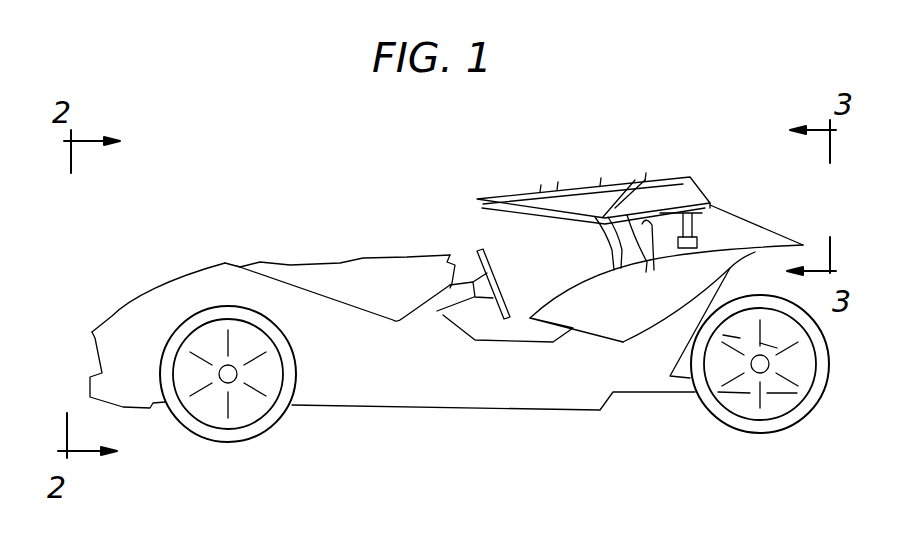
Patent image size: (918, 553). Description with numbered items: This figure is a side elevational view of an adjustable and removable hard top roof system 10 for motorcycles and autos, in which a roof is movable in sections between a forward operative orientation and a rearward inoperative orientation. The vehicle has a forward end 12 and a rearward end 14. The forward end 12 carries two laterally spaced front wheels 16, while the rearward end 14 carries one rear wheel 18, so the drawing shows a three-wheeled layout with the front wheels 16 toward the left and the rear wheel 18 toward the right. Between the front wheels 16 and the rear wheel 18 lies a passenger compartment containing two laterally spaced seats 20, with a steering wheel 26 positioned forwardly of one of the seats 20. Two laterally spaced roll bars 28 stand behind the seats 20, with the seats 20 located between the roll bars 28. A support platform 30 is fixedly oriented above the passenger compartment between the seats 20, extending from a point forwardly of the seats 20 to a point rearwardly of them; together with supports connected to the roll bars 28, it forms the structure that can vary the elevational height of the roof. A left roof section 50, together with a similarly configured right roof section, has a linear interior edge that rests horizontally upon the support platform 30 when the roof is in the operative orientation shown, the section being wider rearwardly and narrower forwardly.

The adjustable and removable hard top roof system 10 is at (709, 138).
The forward end 12 is at (90, 332).
The rearward end 14 is at (803, 243).
The front wheels 16 is at (250, 430).
The rear wheel 18 is at (770, 421).
The seats 20 is at (637, 196).
The steering wheel 26 is at (482, 253).
The roll bars 28 is at (710, 205).
The support platform 30 is at (541, 185).
The left roof section 50 is at (597, 200).